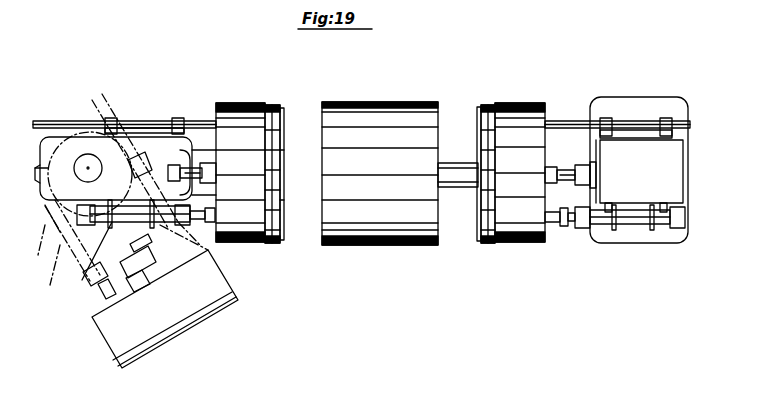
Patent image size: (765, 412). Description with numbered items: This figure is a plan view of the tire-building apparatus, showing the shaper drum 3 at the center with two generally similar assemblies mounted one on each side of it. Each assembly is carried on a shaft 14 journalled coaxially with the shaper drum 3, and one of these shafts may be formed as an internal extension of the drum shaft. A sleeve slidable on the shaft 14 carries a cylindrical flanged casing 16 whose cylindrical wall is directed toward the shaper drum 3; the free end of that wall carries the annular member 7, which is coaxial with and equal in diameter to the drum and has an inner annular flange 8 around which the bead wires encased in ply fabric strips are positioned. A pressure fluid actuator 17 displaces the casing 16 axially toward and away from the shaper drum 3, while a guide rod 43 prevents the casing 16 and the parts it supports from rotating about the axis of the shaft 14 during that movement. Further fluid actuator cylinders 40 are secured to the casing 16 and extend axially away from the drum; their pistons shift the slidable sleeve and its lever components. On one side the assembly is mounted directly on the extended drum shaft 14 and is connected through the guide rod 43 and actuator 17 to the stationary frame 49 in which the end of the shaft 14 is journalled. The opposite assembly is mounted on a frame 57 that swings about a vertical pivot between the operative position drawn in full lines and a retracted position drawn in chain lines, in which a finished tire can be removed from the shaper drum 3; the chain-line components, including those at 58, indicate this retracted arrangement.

The shaper drum 3 is at (376, 130).
The annular member 7 is at (270, 105).
The inner annular flange 8 is at (283, 110).
The shaft 14 is at (448, 172).
The cylindrical flanged casing 16 is at (231, 122).
The pressure fluid actuator 17 is at (100, 262).
The fluid actuator cylinders 40 is at (184, 165).
The guide rod 43 is at (150, 121).
The stationary frame 49 is at (641, 185).
The frame 57 is at (68, 140).
The tilted assembly 58 is at (138, 231).